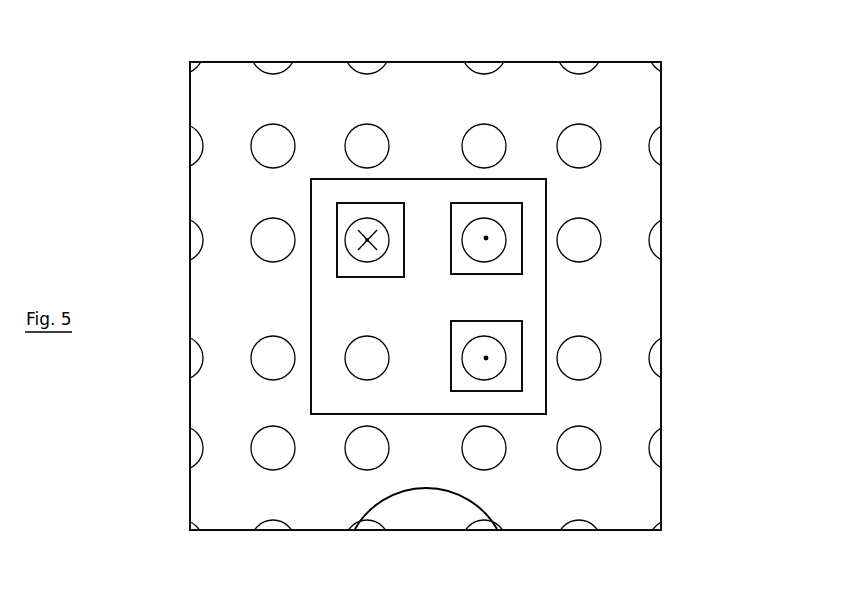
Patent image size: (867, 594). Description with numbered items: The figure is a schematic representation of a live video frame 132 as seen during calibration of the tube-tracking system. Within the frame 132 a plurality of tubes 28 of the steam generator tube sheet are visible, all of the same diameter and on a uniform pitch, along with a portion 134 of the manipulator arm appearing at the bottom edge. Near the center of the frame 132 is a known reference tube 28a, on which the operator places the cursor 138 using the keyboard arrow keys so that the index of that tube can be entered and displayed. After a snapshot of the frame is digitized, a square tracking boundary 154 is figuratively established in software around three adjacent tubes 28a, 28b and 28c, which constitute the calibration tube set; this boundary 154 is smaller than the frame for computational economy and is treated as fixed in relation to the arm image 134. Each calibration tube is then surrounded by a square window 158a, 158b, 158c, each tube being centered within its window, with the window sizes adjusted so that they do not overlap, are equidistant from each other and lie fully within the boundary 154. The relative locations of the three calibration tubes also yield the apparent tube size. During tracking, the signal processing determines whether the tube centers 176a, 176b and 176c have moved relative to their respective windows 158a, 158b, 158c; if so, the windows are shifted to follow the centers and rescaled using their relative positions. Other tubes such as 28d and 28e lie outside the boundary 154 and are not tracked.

The video frame 132 is at (229, 62).
The tubes 28 is at (277, 124).
The reference tube 28a is at (379, 220).
The calibration tube 28b is at (488, 216).
The calibration tube 28c is at (491, 380).
The hole 28d is at (346, 457).
The hole 28e is at (496, 466).
The cursor 138 is at (368, 240).
The tracking boundary 154 is at (546, 206).
The window 158a is at (337, 211).
The window 158b is at (486, 238).
The window 158c is at (522, 386).
The tube center 176a is at (363, 236).
The tube center 176b is at (522, 249).
The tube center 176c is at (486, 358).
The portion of the arm 134 is at (448, 517).